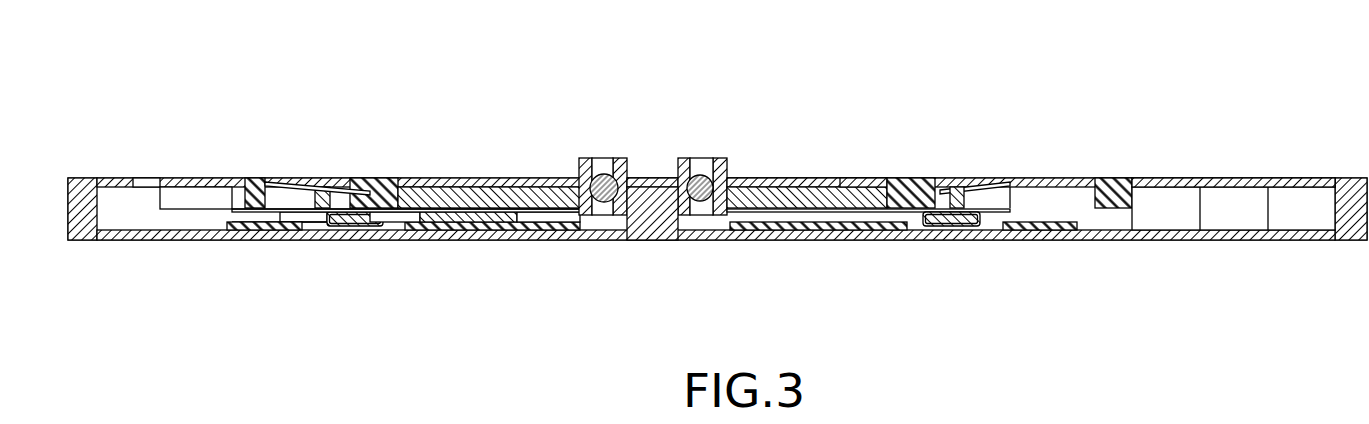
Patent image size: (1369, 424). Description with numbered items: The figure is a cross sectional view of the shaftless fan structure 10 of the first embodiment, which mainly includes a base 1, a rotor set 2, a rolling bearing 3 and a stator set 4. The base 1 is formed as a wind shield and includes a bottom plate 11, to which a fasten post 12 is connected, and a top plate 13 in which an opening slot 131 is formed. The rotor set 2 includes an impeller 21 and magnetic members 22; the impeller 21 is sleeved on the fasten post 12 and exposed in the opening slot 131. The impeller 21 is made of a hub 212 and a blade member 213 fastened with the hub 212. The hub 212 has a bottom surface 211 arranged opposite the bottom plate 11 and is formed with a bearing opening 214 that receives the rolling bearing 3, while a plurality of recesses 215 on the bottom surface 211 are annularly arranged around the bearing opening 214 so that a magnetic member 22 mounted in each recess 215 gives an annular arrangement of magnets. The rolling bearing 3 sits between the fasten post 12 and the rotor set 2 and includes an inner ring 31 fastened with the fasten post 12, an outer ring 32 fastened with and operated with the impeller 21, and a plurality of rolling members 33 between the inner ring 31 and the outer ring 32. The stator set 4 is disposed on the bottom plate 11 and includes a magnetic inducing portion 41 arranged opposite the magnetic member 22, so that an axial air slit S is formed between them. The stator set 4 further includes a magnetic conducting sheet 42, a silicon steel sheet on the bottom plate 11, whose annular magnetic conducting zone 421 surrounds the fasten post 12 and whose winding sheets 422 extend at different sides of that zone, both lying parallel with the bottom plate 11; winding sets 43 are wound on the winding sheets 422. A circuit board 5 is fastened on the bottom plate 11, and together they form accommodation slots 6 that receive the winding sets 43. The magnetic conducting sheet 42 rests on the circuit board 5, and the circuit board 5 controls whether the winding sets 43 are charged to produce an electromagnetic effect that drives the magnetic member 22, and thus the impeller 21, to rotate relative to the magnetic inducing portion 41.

The fan structure 10 is at (442, 65).
The base 1 is at (517, 252).
The bottom plate 11 is at (1115, 229).
The fasten post 12 is at (648, 190).
The top plate 13 is at (1260, 182).
The opening slot 131 is at (1170, 182).
The rotor set 2 is at (787, 168).
The impeller 21 is at (925, 122).
The bottom surface 211 is at (907, 213).
The hub 212 is at (858, 180).
The blade member 213 is at (922, 185).
The bearing opening 214 is at (586, 166).
The recess 215 is at (730, 196).
The magnetic member 22 is at (836, 194).
The rolling bearing 3 is at (702, 120).
The inner ring 31 is at (650, 178).
The outer ring 32 is at (716, 160).
The rolling member 33 is at (697, 175).
The stator set 4 is at (453, 299).
The magnetic inducing portion 41 is at (467, 203).
The annular magnetic conducting zone 421 is at (495, 211).
The winding sheet 422 is at (338, 211).
The magnetic conducting sheet 42 is at (442, 234).
The winding set 43 is at (360, 226).
The circuit board 5 is at (576, 231).
The accommodation slot 6 is at (318, 231).
The axial air slit s is at (421, 197).